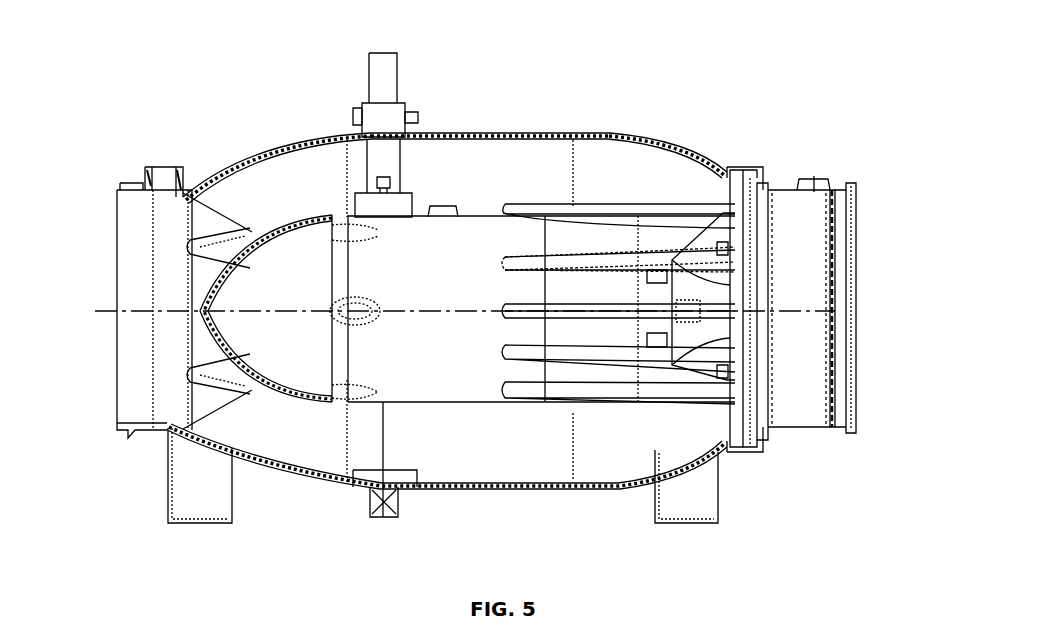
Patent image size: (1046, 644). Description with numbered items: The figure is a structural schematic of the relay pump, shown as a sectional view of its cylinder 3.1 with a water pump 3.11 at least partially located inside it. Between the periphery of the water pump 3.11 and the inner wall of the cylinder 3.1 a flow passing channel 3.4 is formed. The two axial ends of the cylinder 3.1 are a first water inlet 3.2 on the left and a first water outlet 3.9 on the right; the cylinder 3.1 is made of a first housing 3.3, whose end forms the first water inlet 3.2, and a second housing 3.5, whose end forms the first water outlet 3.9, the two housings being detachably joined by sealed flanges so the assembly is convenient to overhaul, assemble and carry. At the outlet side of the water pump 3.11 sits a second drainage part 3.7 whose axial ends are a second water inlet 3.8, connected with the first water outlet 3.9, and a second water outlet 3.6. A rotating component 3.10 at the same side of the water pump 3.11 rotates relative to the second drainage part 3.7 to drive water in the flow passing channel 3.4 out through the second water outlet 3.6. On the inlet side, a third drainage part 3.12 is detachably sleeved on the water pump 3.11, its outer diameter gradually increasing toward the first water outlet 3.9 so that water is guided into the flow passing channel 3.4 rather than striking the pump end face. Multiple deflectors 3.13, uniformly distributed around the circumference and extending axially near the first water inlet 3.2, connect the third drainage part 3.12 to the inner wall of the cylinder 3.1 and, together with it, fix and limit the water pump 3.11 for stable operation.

The cylinder 3.1 is at (465, 278).
The first water inlet 3.2 is at (138, 258).
The first housing 3.3 is at (255, 153).
The flow passing channel 3.4 is at (497, 165).
The second housing 3.5 is at (598, 135).
The second water outlet 3.6 is at (858, 345).
The second drainage part 3.7 is at (800, 363).
The second water inlet 3.8 is at (733, 333).
The first water outlet 3.9 is at (745, 443).
The rotating component 3.10 is at (703, 322).
The water pump 3.11 is at (430, 350).
The third drainage part 3.12 is at (272, 393).
The deflector 3.13 is at (197, 400).